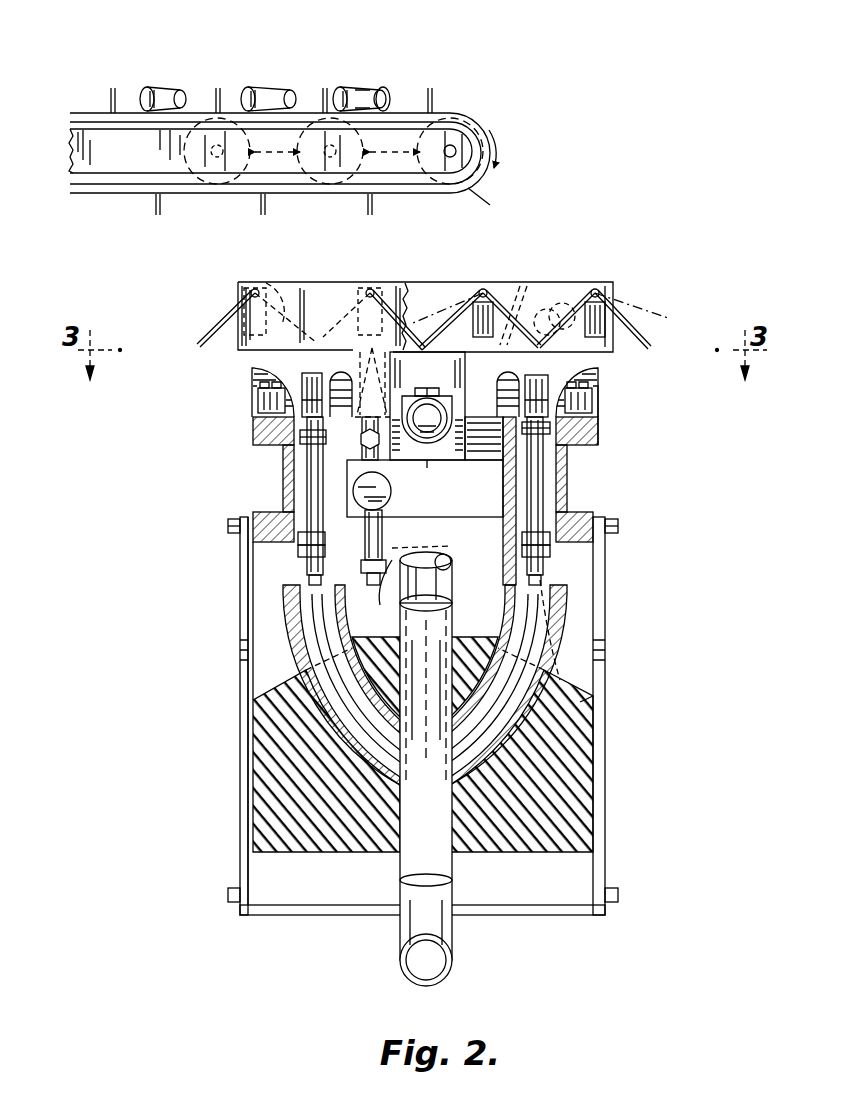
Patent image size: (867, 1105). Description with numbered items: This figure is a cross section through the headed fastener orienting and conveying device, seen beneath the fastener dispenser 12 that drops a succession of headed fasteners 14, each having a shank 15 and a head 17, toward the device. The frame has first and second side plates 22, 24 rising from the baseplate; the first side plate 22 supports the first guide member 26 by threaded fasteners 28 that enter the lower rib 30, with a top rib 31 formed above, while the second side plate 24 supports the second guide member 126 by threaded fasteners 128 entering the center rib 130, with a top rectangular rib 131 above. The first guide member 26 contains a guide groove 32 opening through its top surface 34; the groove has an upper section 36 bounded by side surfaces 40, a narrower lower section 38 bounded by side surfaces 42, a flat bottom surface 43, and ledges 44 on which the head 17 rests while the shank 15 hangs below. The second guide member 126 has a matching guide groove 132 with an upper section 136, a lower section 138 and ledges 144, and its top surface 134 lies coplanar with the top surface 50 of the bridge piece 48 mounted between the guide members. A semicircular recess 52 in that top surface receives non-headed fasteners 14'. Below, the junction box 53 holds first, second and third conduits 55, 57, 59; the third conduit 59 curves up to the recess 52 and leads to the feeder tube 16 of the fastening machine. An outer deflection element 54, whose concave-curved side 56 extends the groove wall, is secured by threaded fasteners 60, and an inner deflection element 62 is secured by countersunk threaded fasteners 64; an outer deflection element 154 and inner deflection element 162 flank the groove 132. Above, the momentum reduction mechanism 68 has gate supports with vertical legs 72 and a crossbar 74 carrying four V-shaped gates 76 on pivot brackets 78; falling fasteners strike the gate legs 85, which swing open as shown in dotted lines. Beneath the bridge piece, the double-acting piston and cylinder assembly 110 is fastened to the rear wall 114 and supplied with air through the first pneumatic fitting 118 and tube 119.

The fastener dispenser 12 is at (207, 205).
The headed fastener 14 is at (365, 244).
The shank 15 is at (362, 93).
The head 17 is at (386, 92).
The feeder tube 16 is at (453, 930).
The first side plate 22 is at (606, 843).
The second side plate 24 is at (240, 842).
The first guide member 26 is at (568, 504).
The threaded fasteners 28 is at (620, 530).
The lower rib 30 is at (595, 517).
The top rib 31 is at (567, 452).
The guide groove 32 is at (650, 348).
The top surface 34 is at (598, 426).
The upper section 36 is at (592, 406).
The lower section 38 is at (556, 600).
The side surfaces 40 is at (552, 446).
The side surfaces 42 is at (550, 562).
The flat bottom surface 43 is at (554, 660).
The ledges 44 is at (560, 448).
The bridge piece 48 is at (394, 496).
The top surface 50 is at (374, 376).
The recess 52 is at (470, 442).
The junction box 53 is at (597, 692).
The outer deflection element 54 is at (600, 390).
The first conduit 55 is at (486, 772).
The concave-curved side 56 is at (598, 373).
The second conduit 57 is at (362, 764).
The third conduit 59 is at (452, 876).
The threaded fasteners 60 is at (598, 385).
The inner deflection element 62 is at (513, 300).
The countersunk threaded fasteners 64 is at (515, 398).
The momentum reduction mechanism 68 is at (613, 300).
The vertical legs 72 is at (395, 384).
The crossbar 74 is at (336, 300).
The gates 76 is at (485, 287).
The pivot bracket 78 is at (478, 291).
The gate legs 85 is at (242, 302).
The double-acting piston and cylinder assembly 110 is at (307, 472).
The rear wall 114 is at (408, 509).
The first pneumatic fitting 118 is at (376, 588).
The tube 119 is at (402, 556).
The second guide member 126 is at (283, 482).
The threaded fasteners 128 is at (245, 545).
The center rib 130 is at (253, 522).
The top rectangular rib 131 is at (253, 430).
The guide groove 132 is at (204, 344).
The top surface 134 is at (258, 400).
The upper section 136 is at (258, 392).
The lower section 138 is at (300, 538).
The ledges 144 is at (300, 440).
The outer deflection element 154 is at (262, 367).
The inner deflection element 162 is at (320, 350).
The fasteners 14' is at (448, 474).